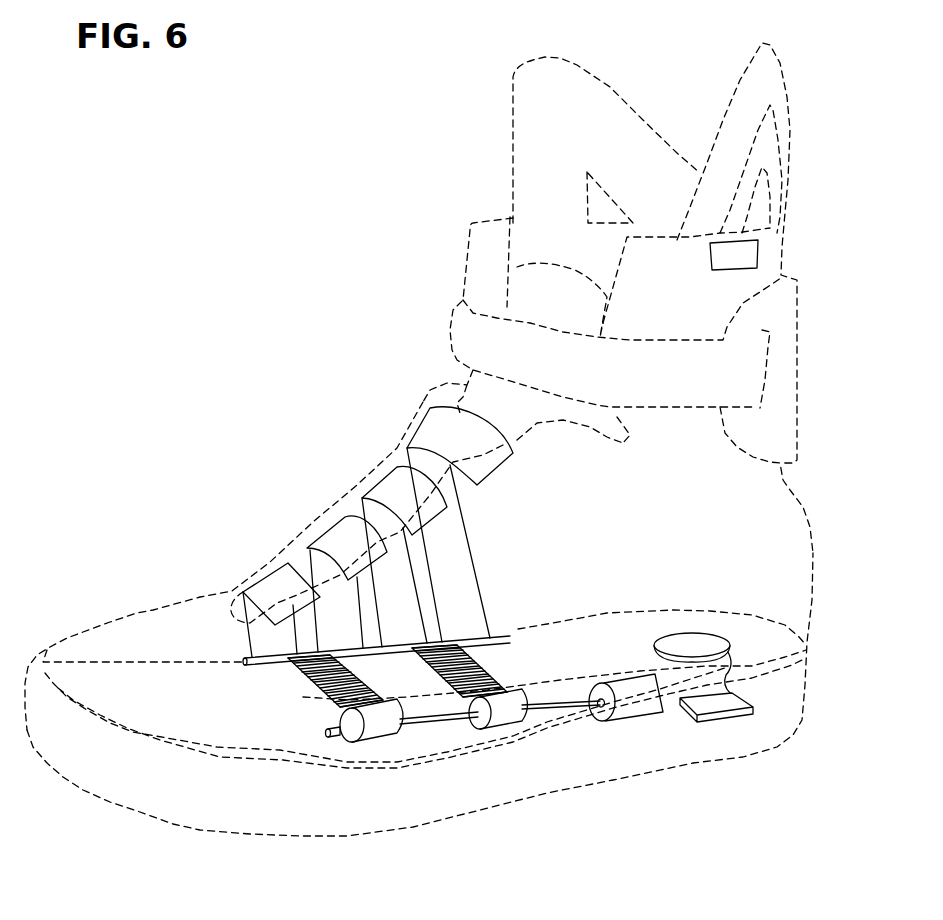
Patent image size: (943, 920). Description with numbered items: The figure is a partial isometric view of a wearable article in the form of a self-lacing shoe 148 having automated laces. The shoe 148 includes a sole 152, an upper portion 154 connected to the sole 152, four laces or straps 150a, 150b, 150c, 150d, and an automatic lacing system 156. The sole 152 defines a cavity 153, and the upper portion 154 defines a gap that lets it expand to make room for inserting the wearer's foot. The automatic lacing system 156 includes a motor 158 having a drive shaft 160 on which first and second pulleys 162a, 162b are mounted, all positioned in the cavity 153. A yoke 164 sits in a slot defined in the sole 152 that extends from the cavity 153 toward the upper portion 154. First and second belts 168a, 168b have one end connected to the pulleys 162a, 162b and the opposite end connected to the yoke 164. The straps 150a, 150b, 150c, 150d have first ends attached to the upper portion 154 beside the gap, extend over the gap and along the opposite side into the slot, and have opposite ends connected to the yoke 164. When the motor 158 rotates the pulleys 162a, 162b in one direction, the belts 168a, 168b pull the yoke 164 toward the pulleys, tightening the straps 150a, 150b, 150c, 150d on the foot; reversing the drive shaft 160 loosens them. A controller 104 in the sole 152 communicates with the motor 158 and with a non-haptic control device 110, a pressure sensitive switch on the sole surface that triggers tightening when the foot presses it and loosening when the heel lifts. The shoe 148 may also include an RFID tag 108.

The controller 104 is at (725, 713).
The RFID tag 108 is at (710, 257).
The non-haptic control device 110 is at (705, 633).
The shoe 148 is at (513, 130).
The strap 150a is at (272, 578).
The strap 150b is at (330, 528).
The strap 150c is at (373, 478).
The strap 150d is at (412, 427).
The sole 152 is at (192, 823).
The cavity 153 is at (570, 678).
The upper portion 154 is at (137, 613).
The automatic lacing system 156 is at (478, 786).
The motor 158 is at (640, 713).
The drive shaft 160 is at (428, 718).
The first pulley 162a is at (353, 740).
The second pulley 162b is at (477, 728).
The yoke 164 is at (505, 641).
The first belt 168a is at (313, 680).
The second belt 168b is at (483, 668).